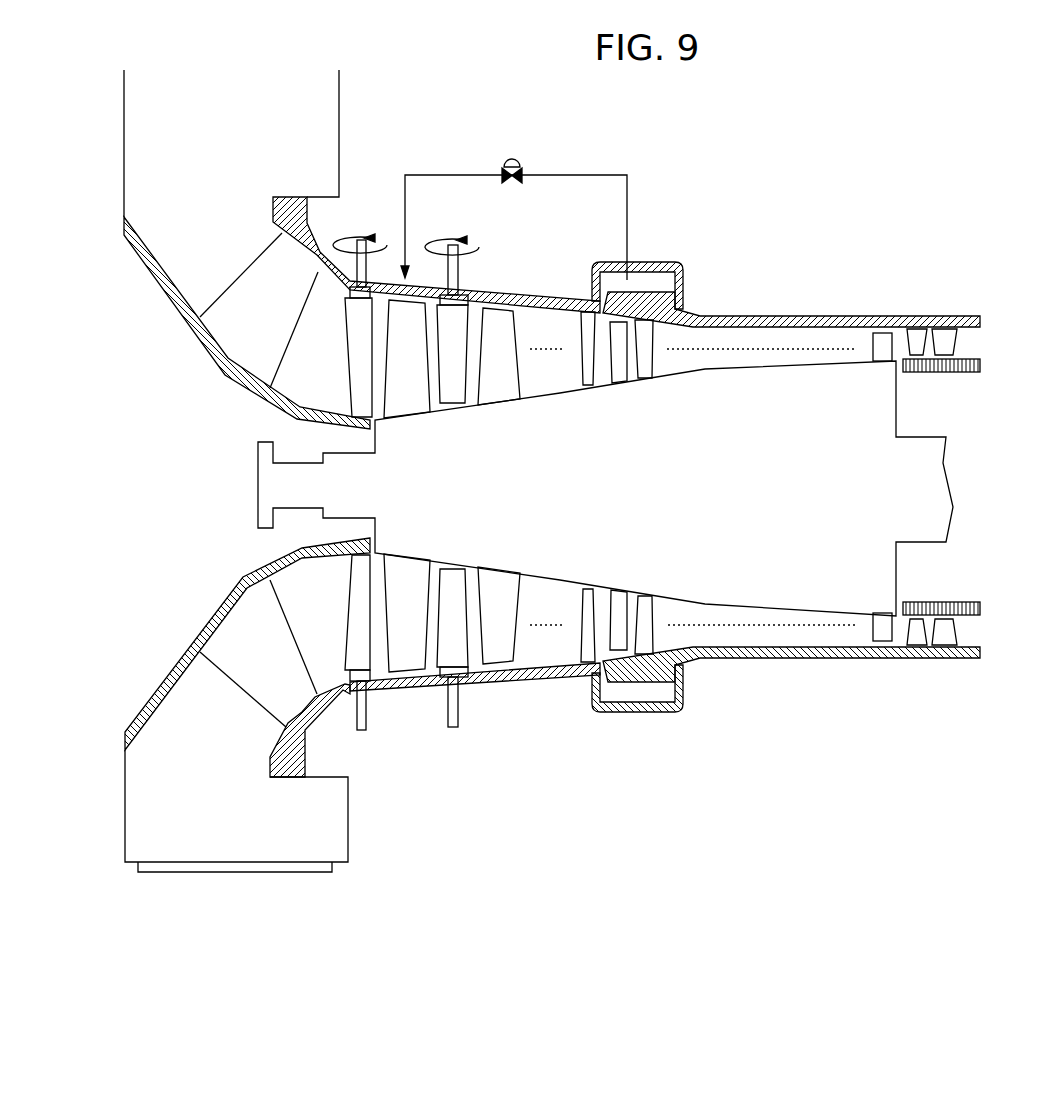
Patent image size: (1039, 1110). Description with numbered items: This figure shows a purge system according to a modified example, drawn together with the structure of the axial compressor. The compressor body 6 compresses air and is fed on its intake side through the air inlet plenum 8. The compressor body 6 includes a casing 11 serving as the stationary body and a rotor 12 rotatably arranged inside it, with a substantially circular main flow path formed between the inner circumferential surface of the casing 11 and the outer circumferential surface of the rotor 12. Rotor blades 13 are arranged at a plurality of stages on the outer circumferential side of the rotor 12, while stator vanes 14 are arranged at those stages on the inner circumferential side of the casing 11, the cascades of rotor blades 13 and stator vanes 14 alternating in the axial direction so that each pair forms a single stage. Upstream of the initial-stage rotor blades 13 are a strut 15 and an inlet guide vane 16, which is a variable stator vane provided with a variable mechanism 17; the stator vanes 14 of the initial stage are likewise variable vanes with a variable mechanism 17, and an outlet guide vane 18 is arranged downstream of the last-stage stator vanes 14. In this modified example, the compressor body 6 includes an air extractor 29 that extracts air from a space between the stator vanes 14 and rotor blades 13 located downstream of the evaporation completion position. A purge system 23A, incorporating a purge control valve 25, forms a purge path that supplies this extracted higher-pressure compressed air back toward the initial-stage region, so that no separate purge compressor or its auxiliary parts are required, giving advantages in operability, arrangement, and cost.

The compressor body 6 is at (801, 672).
The air inlet plenum 8 is at (124, 144).
The casing 11 is at (767, 315).
The rotor 12 is at (771, 496).
The rotor blades 13 is at (392, 379).
The stator vanes 14 is at (457, 398).
The strut 15 is at (252, 319).
The inlet guide vane 16 is at (362, 360).
The variable mechanism 17 is at (457, 280).
The outlet guide vane 18 is at (950, 329).
The purge system 23A is at (577, 175).
The purge control valve 25 is at (512, 161).
The air extractor 29 is at (657, 282).